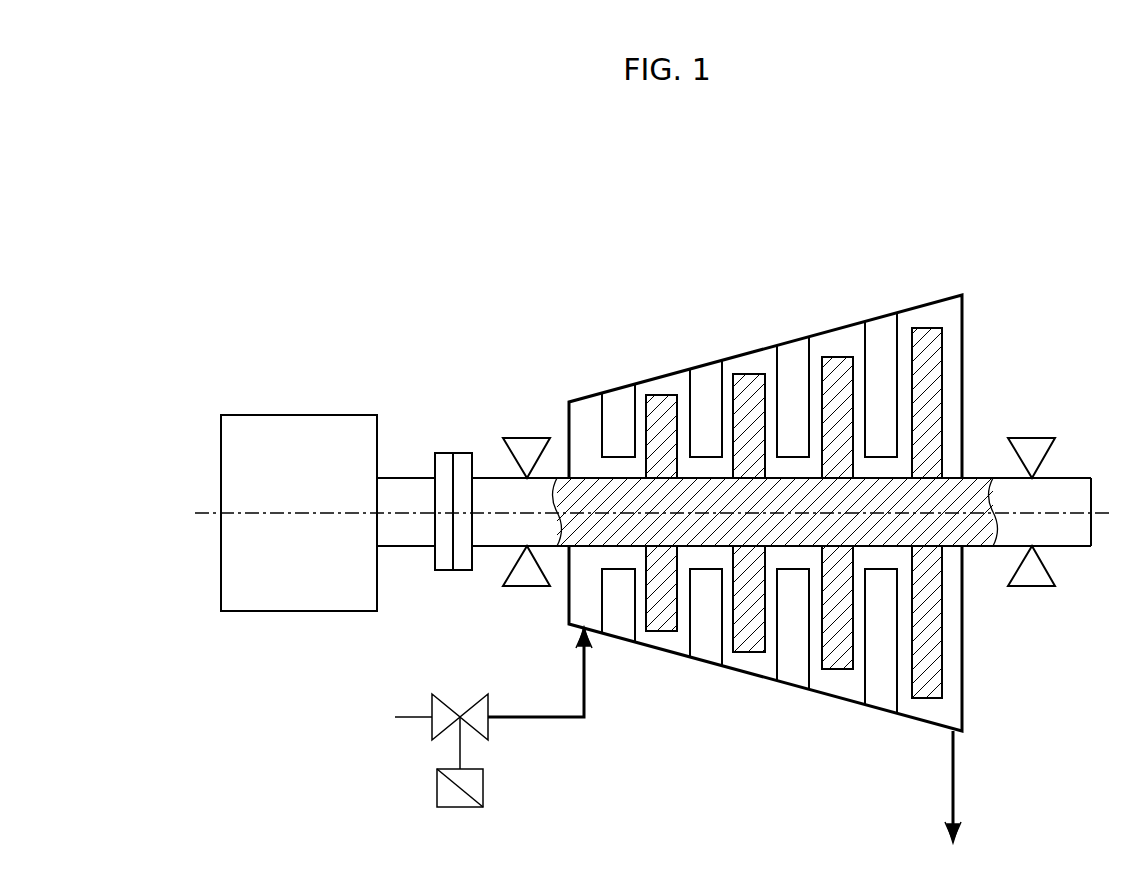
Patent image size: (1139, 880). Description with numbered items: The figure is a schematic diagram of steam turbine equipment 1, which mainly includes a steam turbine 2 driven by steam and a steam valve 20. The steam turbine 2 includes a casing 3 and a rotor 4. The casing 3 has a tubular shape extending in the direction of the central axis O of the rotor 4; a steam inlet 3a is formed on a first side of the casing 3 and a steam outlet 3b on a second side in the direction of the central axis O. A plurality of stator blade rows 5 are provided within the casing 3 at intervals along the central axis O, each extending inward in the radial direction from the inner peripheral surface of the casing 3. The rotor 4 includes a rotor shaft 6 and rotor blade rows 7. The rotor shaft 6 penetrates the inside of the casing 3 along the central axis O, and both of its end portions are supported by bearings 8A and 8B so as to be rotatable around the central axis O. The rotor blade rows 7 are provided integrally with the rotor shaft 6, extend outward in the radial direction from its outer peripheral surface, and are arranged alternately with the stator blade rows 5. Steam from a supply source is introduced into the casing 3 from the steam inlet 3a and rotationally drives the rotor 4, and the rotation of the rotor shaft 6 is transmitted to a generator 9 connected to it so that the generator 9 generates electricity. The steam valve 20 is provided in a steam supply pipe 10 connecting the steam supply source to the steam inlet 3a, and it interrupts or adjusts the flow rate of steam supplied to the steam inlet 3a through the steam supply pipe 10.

The steam turbine equipment 1 is at (860, 240).
The steam turbine 2 is at (933, 290).
The casing 3 is at (822, 357).
The steam inlet 3a is at (586, 632).
The steam outlet 3b is at (948, 731).
The rotor 4 is at (963, 427).
The stator blade rows 5 is at (777, 363).
The rotor shaft 6 is at (783, 568).
The rotor blade rows 7 is at (657, 632).
The bearing 8A is at (527, 586).
The bearing 8B is at (1019, 586).
The generator 9 is at (310, 415).
The steam supply pipe 10 is at (553, 716).
The steam valve 20 is at (423, 752).
The central axis O is at (1066, 513).